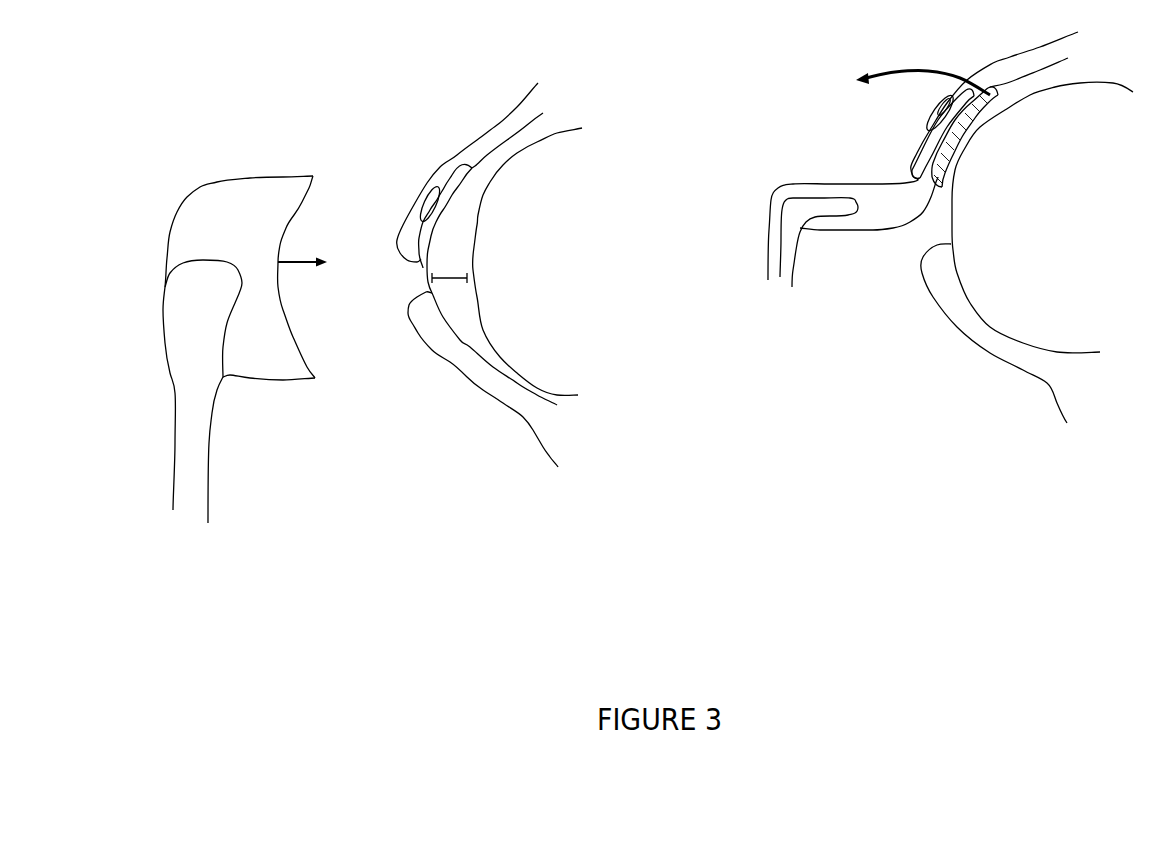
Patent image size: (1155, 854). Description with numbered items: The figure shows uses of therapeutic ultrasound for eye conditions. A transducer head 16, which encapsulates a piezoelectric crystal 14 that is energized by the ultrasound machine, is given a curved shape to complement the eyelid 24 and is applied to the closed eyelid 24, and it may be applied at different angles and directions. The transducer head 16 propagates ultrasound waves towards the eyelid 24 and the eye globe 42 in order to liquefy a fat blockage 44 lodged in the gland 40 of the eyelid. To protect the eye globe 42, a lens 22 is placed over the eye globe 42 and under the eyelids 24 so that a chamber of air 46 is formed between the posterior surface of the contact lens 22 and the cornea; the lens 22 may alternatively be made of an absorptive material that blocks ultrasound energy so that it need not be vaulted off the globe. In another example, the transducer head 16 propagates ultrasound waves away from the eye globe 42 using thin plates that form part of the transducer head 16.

The piezoelectric crystal 14 is at (182, 339).
The transducer head 16 is at (209, 231).
The lens 22 is at (507, 131).
The eyelid 24 is at (418, 186).
The gland 40 is at (455, 162).
The eye globe 42 is at (476, 252).
The fat blockage 44 is at (420, 203).
The chamber of air 46 is at (450, 270).